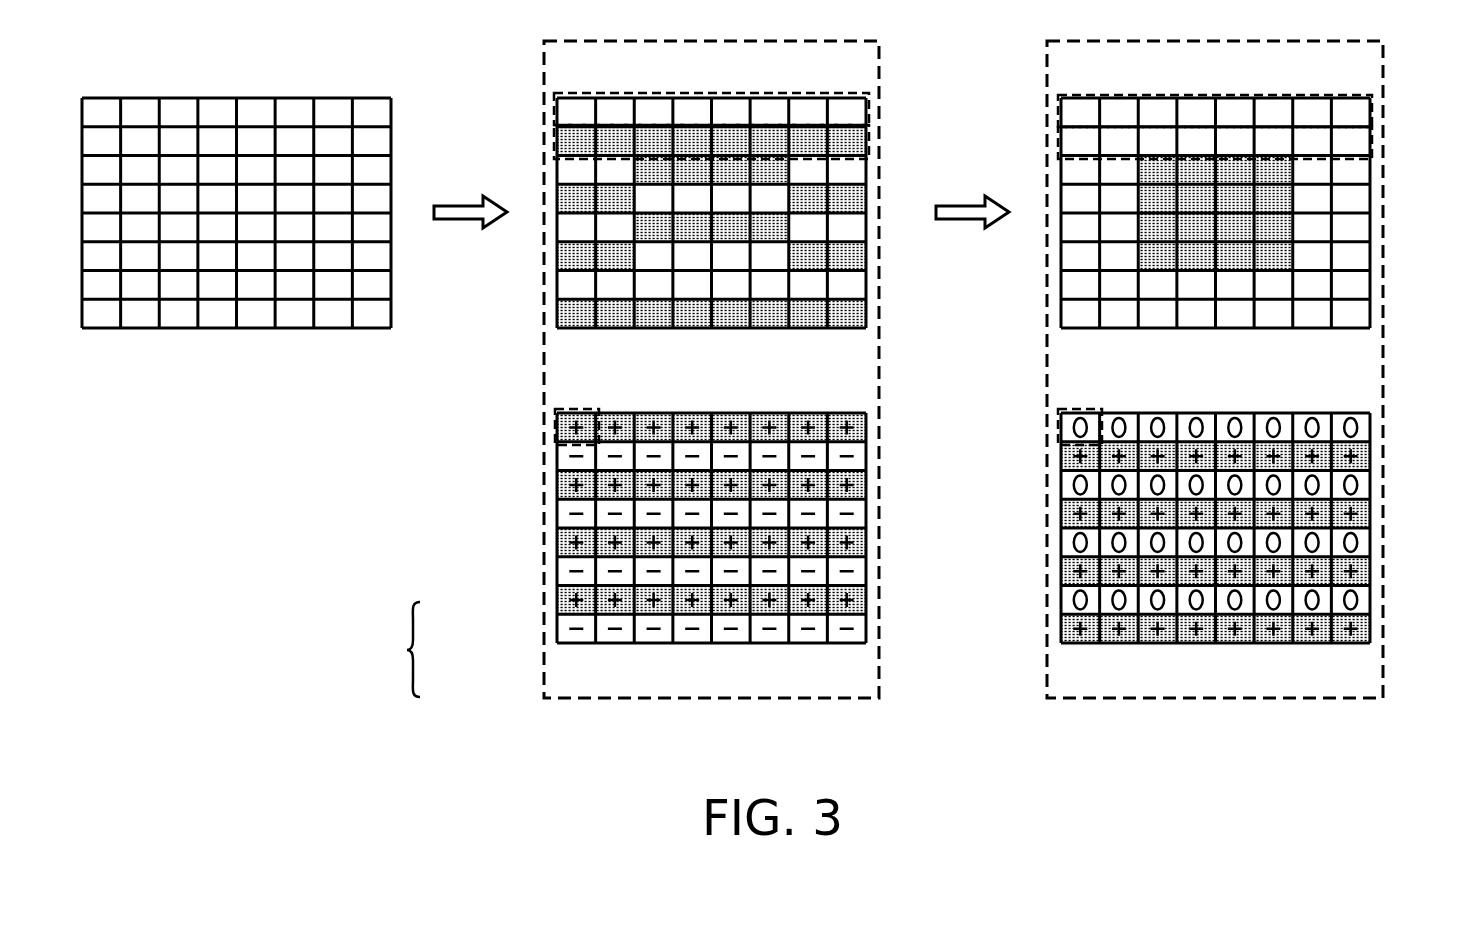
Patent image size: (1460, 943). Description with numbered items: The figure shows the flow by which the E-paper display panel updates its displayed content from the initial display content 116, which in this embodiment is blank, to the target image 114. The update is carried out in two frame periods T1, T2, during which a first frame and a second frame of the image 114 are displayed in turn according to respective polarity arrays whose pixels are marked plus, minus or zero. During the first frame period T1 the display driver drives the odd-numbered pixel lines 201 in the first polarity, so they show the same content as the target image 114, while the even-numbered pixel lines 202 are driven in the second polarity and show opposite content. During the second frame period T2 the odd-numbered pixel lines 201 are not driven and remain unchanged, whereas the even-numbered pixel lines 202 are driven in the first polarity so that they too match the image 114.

The initial display content 116 is at (291, 98).
The image 114 is at (429, 649).
The odd-numbered pixel lines 201 is at (869, 102).
The even-numbered pixel lines 202 is at (869, 148).
The first frame period T1 is at (767, 700).
The second frame period T2 is at (1270, 700).